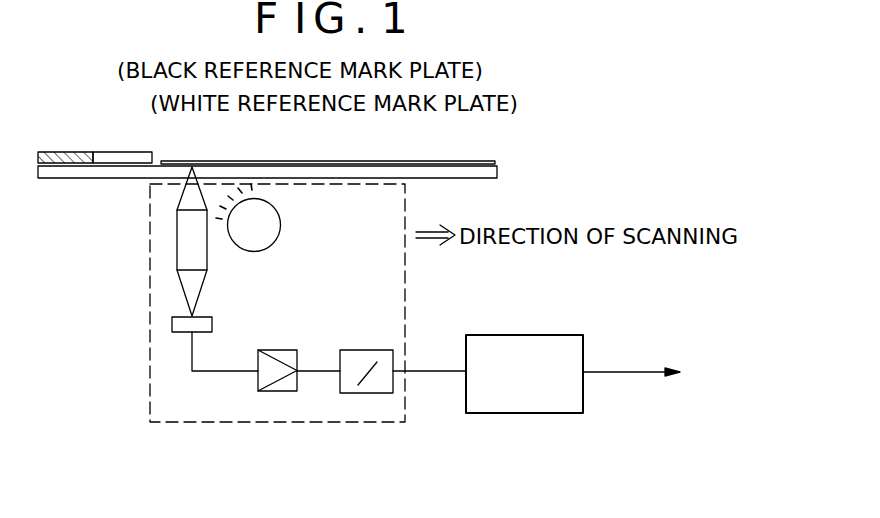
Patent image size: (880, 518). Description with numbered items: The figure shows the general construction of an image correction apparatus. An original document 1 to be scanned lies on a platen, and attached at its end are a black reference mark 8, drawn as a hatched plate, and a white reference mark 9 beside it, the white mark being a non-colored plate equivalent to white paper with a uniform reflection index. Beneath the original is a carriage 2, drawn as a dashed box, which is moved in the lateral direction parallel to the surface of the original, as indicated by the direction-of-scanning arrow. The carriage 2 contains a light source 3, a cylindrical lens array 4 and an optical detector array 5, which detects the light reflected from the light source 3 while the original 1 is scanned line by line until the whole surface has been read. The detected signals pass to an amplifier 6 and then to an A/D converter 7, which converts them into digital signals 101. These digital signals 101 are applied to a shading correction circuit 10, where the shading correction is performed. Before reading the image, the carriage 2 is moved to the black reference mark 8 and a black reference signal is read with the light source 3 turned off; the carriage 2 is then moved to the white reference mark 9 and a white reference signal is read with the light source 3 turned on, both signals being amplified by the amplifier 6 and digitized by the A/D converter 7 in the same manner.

The original document 1 is at (337, 161).
The carriage 2 is at (405, 273).
The light source 3 is at (280, 228).
The cylindrical lens array 4 is at (207, 260).
The optical detector array 5 is at (172, 327).
The amplifier 6 is at (258, 380).
The A/D converter 7 is at (362, 393).
The black reference mark 8 is at (73, 151).
The white reference mark 9 is at (127, 151).
The shading correction circuit 10 is at (543, 335).
The digital signals 101 is at (423, 373).